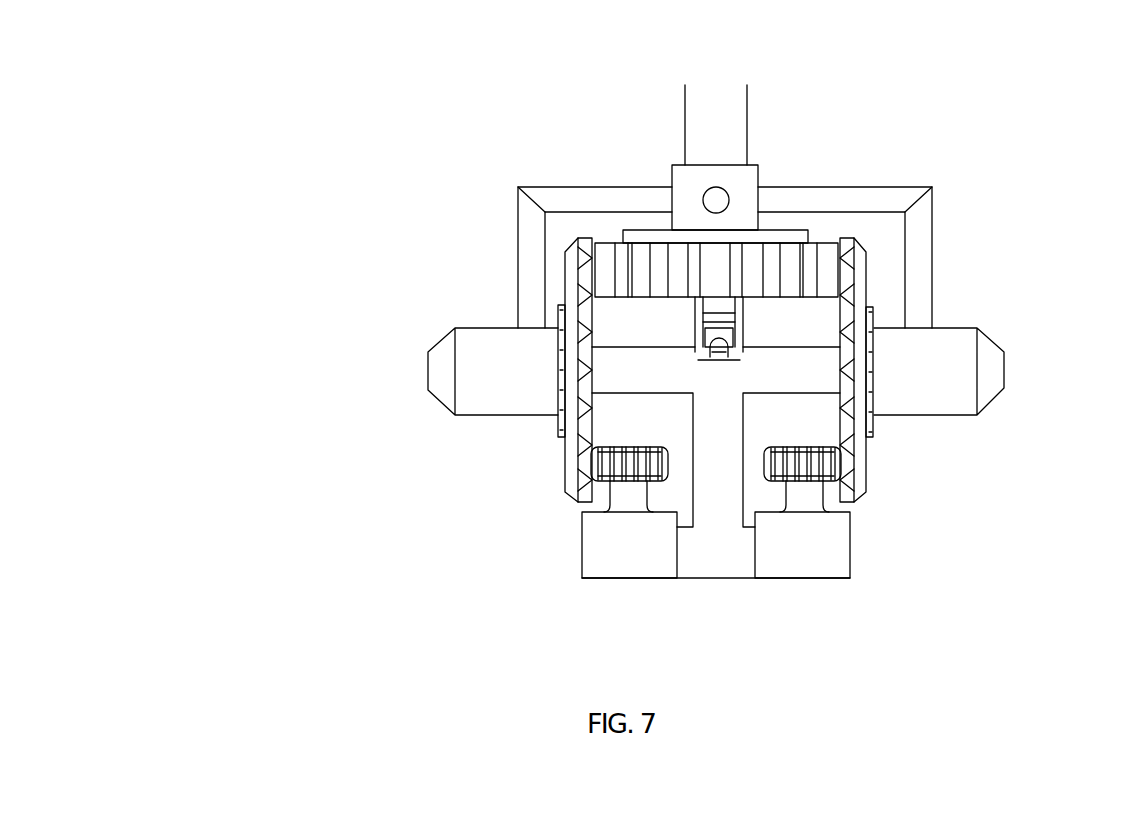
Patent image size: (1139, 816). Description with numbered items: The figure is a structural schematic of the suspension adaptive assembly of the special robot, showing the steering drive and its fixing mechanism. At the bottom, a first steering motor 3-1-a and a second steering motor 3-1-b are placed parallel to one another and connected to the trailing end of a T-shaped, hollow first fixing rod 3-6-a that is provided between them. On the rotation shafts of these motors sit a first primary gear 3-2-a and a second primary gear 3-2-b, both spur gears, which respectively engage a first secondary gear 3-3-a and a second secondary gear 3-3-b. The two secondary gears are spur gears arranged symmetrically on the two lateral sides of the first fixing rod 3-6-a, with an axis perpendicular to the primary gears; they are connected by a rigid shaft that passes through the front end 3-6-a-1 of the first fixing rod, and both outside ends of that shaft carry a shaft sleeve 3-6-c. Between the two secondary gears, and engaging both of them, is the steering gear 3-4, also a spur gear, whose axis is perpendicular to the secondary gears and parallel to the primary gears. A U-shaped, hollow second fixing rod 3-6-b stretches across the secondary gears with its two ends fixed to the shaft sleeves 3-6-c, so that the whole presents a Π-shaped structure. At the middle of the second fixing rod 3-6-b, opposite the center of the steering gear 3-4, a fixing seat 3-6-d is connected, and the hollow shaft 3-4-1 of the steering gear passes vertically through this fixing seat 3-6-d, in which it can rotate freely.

The hollow shaft 3-4-1 is at (682, 133).
The fixing seat 3-6-d is at (747, 180).
The second fixing rod 3-6-b is at (922, 223).
The shaft sleeve 3-6-c is at (470, 386).
The steering gear 3-4 is at (658, 260).
The front end of the first fixing rod 3-6-a-1 is at (635, 362).
The first secondary gear 3-3-a is at (572, 392).
The second secondary gear 3-3-b is at (855, 387).
The first fixing rod 3-6-a is at (713, 532).
The first primary gear 3-2-a is at (605, 480).
The second primary gear 3-2-b is at (845, 478).
The first steering motor 3-1-a is at (600, 562).
The second steering motor 3-1-b is at (832, 565).